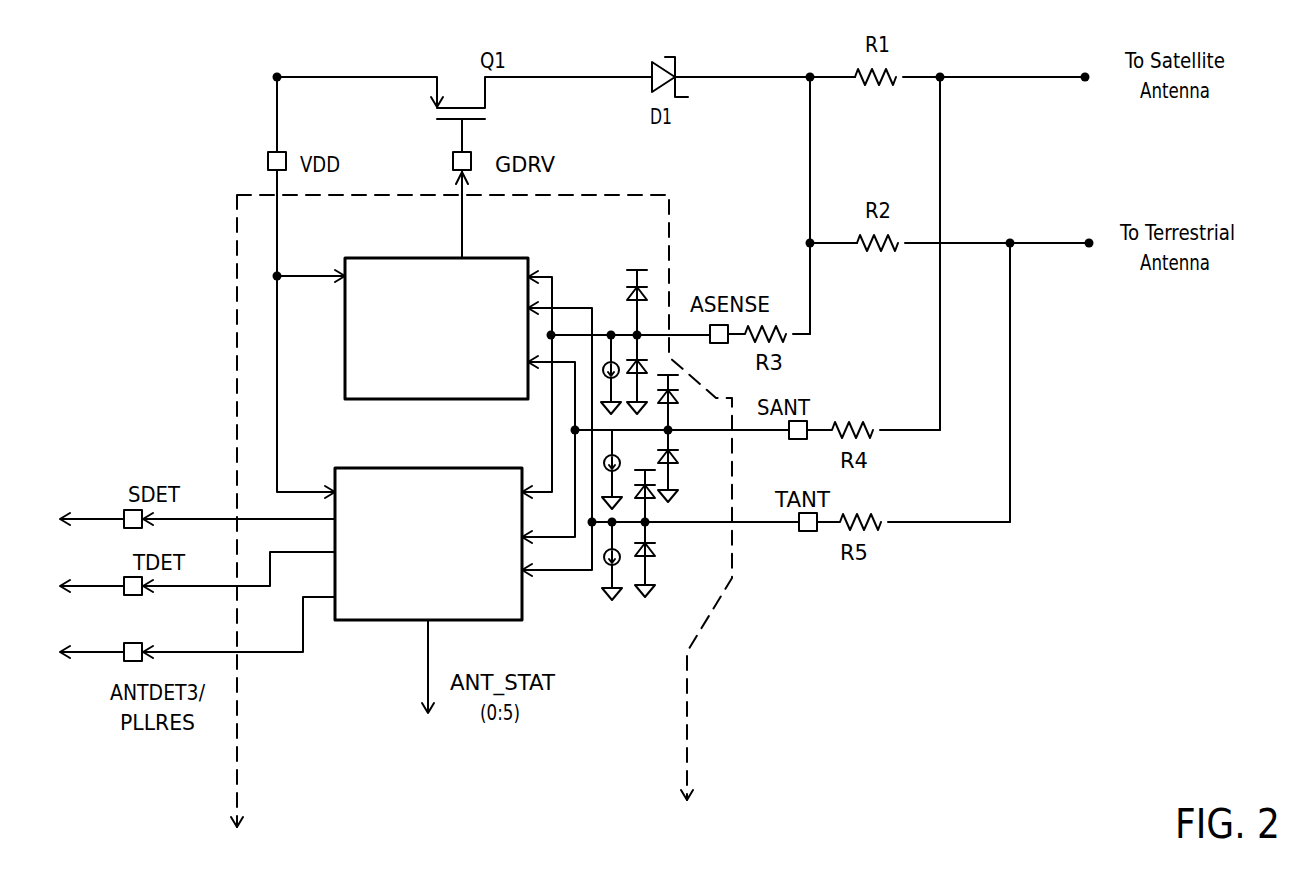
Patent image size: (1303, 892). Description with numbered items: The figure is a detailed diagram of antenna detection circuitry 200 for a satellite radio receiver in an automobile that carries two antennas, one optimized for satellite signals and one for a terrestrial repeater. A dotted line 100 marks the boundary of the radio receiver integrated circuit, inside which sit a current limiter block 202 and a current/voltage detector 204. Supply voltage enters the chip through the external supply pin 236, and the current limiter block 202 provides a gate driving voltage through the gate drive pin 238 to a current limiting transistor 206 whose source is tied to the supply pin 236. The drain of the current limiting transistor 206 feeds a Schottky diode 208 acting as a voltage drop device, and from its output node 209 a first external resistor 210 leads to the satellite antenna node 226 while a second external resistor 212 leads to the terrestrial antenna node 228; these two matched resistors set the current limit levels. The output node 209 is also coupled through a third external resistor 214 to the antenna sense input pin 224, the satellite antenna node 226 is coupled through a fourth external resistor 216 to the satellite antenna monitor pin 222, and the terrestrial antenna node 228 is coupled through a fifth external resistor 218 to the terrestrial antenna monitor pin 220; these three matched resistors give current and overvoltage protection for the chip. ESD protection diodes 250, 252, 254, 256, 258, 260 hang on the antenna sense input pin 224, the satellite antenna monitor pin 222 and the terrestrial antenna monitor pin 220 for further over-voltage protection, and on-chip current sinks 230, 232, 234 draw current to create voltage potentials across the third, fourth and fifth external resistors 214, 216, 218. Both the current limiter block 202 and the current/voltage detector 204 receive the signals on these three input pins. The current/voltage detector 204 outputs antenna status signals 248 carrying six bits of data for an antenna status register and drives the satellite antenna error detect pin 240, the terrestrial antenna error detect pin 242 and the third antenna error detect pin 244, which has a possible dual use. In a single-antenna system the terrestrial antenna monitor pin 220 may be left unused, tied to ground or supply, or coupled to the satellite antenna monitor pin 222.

The radio receiver integrated circuit boundary 100 is at (697, 642).
The antenna detection circuitry 200 is at (150, 177).
The current limiter block 202 is at (414, 258).
The current/voltage detector 204 is at (414, 468).
The current limiting transistor 206 is at (455, 82).
The Schottky diode 208 is at (660, 60).
The output node of diode 209 is at (757, 72).
The first external resistor 210 is at (898, 62).
The second external resistor 212 is at (906, 233).
The third external resistor 214 is at (796, 332).
The fourth external resistor 216 is at (862, 428).
The fifth external resistor 218 is at (878, 520).
The terrestrial antenna monitor pin 220 is at (809, 532).
The satellite antenna monitor pin 222 is at (808, 420).
The antenna sense input pin 224 is at (722, 345).
The satellite antenna node 226 is at (1005, 77).
The terrestrial antenna node 228 is at (1020, 243).
The on-chip current sink 230 is at (605, 365).
The on-chip current sink 232 is at (633, 457).
The on-chip current sink 234 is at (602, 567).
The supply voltage pin 236 is at (286, 155).
The gate drive pin 238 is at (477, 155).
The satellite antenna error detect pin 240 is at (124, 515).
The terrestrial antenna error detect pin 242 is at (124, 582).
The third antenna error detect pin 244 is at (124, 650).
The antenna status signals 248 is at (427, 668).
The ESD protection diode 250 is at (647, 288).
The ESD protection diode 252 is at (650, 363).
The ESD protection diode 254 is at (677, 397).
The ESD protection diode 256 is at (674, 453).
The ESD protection diode 258 is at (652, 495).
The ESD protection diode 260 is at (655, 553).